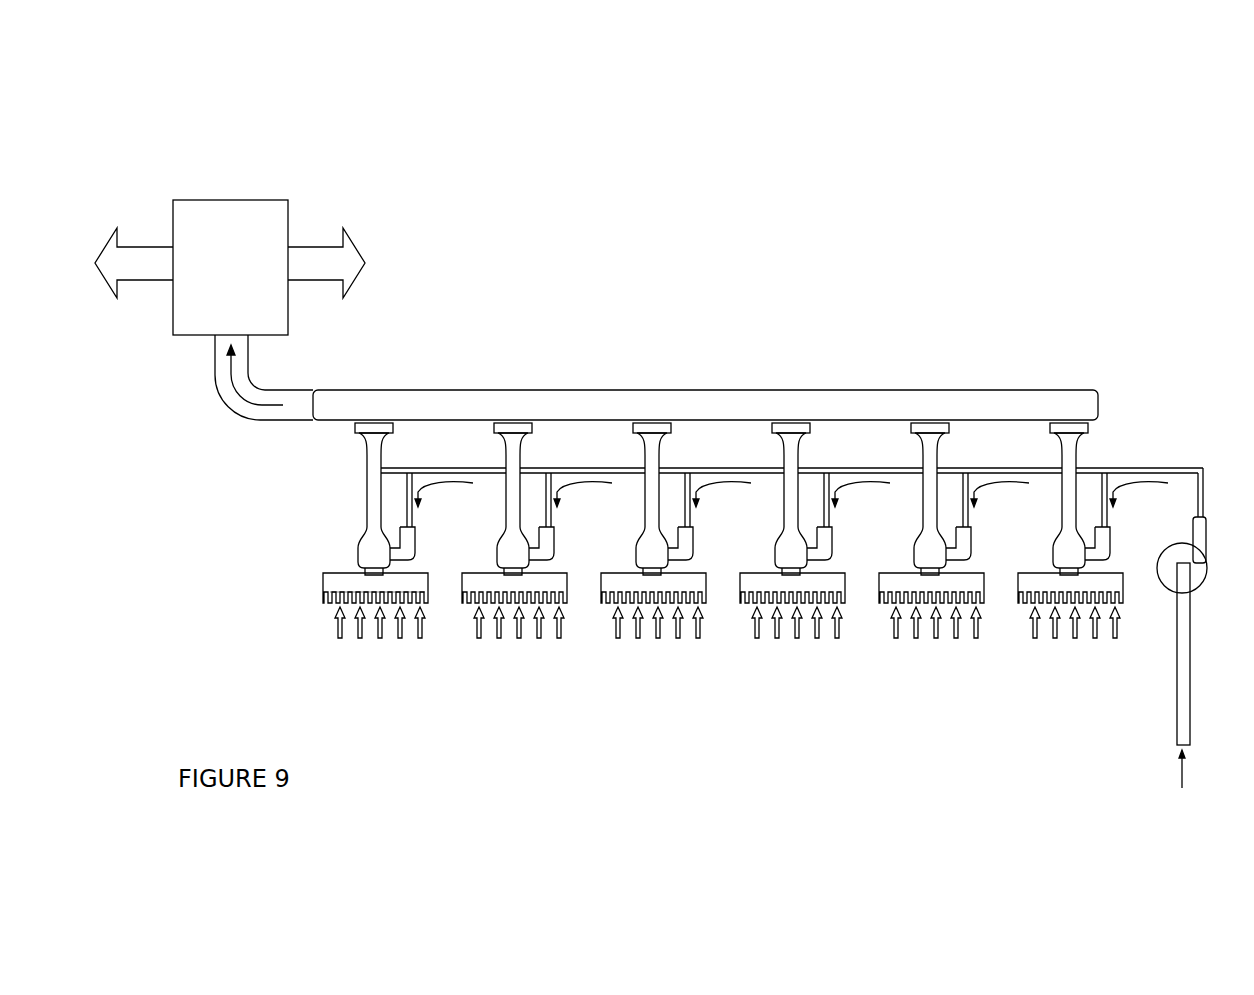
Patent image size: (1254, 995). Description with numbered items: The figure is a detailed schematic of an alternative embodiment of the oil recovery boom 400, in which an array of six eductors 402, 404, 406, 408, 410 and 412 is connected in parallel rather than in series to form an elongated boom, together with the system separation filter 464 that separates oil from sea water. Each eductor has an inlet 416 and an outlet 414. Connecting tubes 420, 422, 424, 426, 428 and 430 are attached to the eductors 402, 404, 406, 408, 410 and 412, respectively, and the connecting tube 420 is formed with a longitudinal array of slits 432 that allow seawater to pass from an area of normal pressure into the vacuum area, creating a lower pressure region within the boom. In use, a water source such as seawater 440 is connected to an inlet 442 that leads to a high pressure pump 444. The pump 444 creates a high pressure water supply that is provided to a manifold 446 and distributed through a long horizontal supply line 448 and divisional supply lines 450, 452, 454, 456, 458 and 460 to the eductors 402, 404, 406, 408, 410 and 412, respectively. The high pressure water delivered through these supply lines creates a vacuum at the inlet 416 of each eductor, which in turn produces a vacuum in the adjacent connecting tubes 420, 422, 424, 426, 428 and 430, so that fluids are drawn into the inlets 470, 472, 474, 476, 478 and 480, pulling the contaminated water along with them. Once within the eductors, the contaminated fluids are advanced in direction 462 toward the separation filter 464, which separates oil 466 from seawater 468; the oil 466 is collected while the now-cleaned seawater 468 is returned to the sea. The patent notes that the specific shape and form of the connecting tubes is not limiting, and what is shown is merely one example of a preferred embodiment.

The oil recovery boom 400 is at (240, 134).
The eductor 402 is at (339, 499).
The eductor 404 is at (506, 530).
The eductor 406 is at (645, 530).
The eductor 408 is at (784, 530).
The eductor 410 is at (923, 530).
The eductor 412 is at (1062, 530).
The outlet 414 is at (372, 440).
The inlet 416 is at (365, 560).
The connecting tube 420 is at (338, 622).
The connecting tube 422 is at (473, 580).
The connecting tube 424 is at (612, 580).
The connecting tube 426 is at (751, 580).
The connecting tube 428 is at (890, 580).
The connecting tube 430 is at (1029, 580).
The longitudinal array of slits 432 is at (337, 595).
The seawater 440 is at (1178, 768).
The inlet 442 is at (1177, 672).
The high pressure pump 444 is at (1195, 575).
The manifold 446 is at (653, 403).
The horizontal supply line 448 is at (690, 466).
The divisional supply line 450 is at (417, 518).
The divisional supply line 452 is at (556, 518).
The divisional supply line 454 is at (695, 518).
The divisional supply line 456 is at (834, 518).
The divisional supply line 458 is at (973, 518).
The divisional supply line 460 is at (1113, 518).
The direction 462 is at (240, 408).
The separator filter 464 is at (242, 212).
The oil 466 is at (160, 250).
The seawater 468 is at (343, 250).
The inlet 470 is at (328, 612).
The inlet 472 is at (467, 612).
The inlet 474 is at (606, 612).
The inlet 476 is at (745, 612).
The inlet 478 is at (884, 612).
The inlet 480 is at (1023, 612).